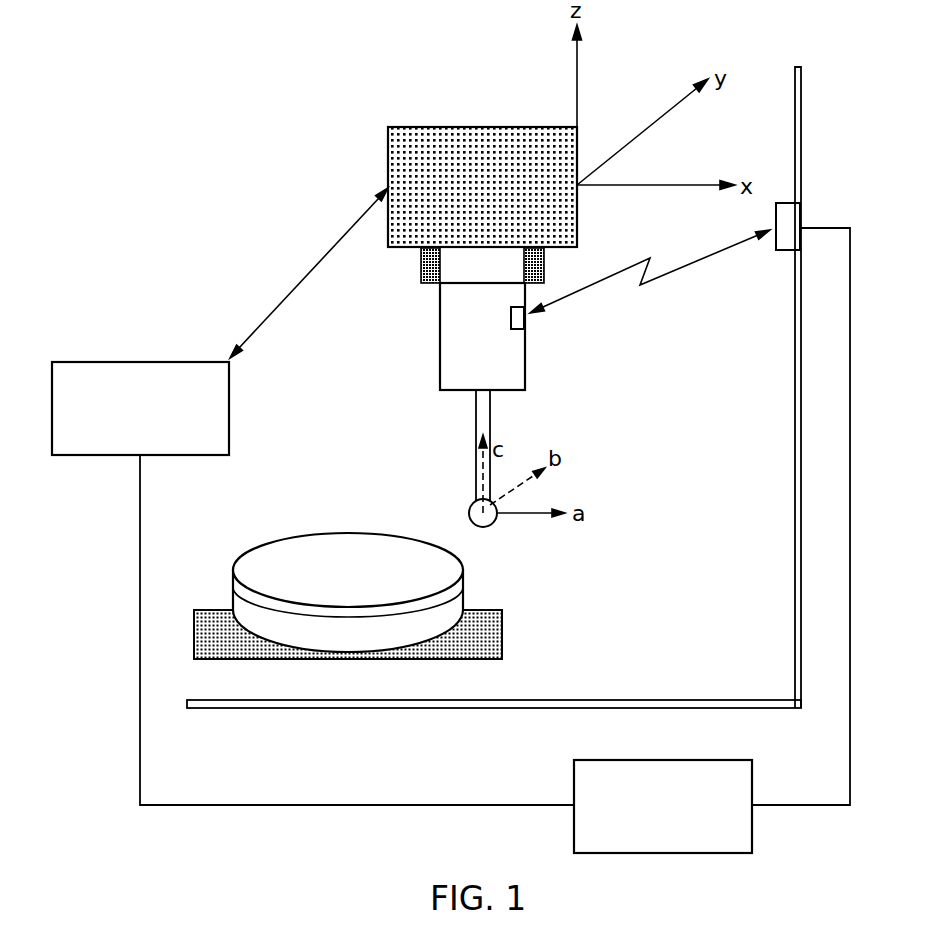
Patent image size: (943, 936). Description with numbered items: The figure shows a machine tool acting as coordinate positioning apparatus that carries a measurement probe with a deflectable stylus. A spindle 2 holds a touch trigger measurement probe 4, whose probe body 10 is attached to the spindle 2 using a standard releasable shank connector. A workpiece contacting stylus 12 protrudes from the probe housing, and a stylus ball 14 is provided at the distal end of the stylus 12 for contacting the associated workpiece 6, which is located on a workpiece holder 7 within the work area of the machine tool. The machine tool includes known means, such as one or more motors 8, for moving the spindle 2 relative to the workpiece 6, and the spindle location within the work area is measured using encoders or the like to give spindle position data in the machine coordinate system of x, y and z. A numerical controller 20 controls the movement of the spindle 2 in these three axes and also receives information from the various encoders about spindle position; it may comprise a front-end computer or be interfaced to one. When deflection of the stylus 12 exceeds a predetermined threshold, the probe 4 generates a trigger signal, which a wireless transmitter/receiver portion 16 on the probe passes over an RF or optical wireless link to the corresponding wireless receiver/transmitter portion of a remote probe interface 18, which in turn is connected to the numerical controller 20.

The spindle 2 is at (455, 127).
The touch trigger measurement probe 4 is at (428, 332).
The workpiece 6 is at (356, 587).
The workpiece holder 7 is at (503, 632).
The motors 8 is at (148, 425).
The probe body 10 is at (499, 357).
The stylus 12 is at (479, 409).
The stylus ball 14 is at (485, 527).
The wireless transmitter/receiver portion 16 is at (526, 318).
The remote probe interface 18 is at (789, 227).
The numerical controller 20 is at (678, 822).